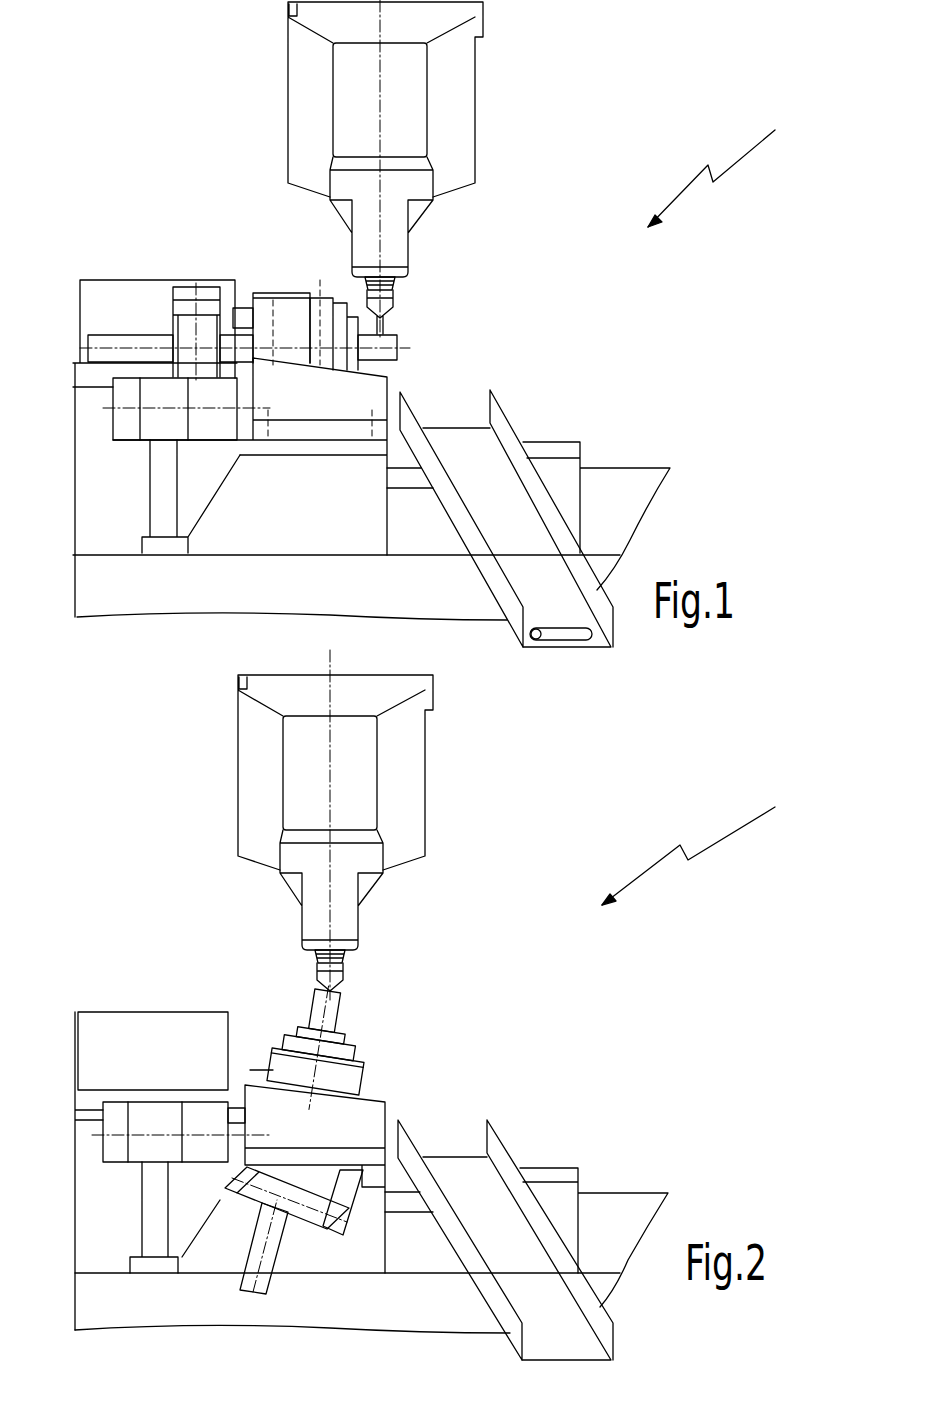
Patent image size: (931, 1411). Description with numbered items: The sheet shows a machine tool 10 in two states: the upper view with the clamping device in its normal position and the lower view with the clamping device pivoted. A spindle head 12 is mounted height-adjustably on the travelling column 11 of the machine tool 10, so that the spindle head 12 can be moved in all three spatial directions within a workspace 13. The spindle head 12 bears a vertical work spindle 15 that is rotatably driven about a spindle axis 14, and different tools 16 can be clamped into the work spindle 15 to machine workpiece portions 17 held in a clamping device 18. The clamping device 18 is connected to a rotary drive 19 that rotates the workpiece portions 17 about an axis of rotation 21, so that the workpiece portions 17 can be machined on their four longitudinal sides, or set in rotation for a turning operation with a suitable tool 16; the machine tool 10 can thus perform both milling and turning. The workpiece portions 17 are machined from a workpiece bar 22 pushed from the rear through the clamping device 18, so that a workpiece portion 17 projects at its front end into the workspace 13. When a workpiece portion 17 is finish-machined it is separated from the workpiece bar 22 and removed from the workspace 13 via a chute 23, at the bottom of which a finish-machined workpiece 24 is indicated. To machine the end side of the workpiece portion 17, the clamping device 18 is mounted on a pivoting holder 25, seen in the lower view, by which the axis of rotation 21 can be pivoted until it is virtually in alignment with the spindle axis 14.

In FIG. 1, the machine tool 10 is at (724, 166).
In FIG. 2, the machine tool 10 is at (701, 844).
In FIG. 1, the travelling column 11 is at (307, 58).
In FIG. 2, the travelling column 11 is at (260, 723).
In FIG. 1, the spindle head 12 is at (350, 107).
In FIG. 2, the spindle head 12 is at (302, 752).
In FIG. 1, the workspace 13 is at (543, 295).
In FIG. 1, the spindle axis 14 is at (382, 100).
In FIG. 2, the spindle axis 14 is at (325, 797).
In FIG. 1, the work spindle 15 is at (408, 267).
In FIG. 2, the work spindle 15 is at (331, 896).
In FIG. 1, the tool 16 is at (385, 307).
In FIG. 2, the tool 16 is at (325, 988).
In FIG. 1, the workpiece portion 17 is at (400, 357).
In FIG. 2, the workpiece portion 17 is at (333, 1027).
In FIG. 1, the clamping device 18 is at (387, 370).
In FIG. 2, the clamping device 18 is at (288, 1045).
In FIG. 1, the rotary drive 19 is at (342, 300).
In FIG. 2, the rotary drive 19 is at (365, 1078).
In FIG. 1, the axis of rotation 21 is at (273, 328).
In FIG. 2, the axis of rotation 21 is at (272, 1247).
In FIG. 1, the workpiece bar 22 is at (130, 327).
In FIG. 2, the workpiece bar 22 is at (250, 1302).
In FIG. 1, the chute 23 is at (480, 463).
In FIG. 2, the chute 23 is at (467, 1173).
In FIG. 1, the finish-machined workpiece 24 is at (565, 647).
In FIG. 2, the pivoting holder 25 is at (362, 1187).